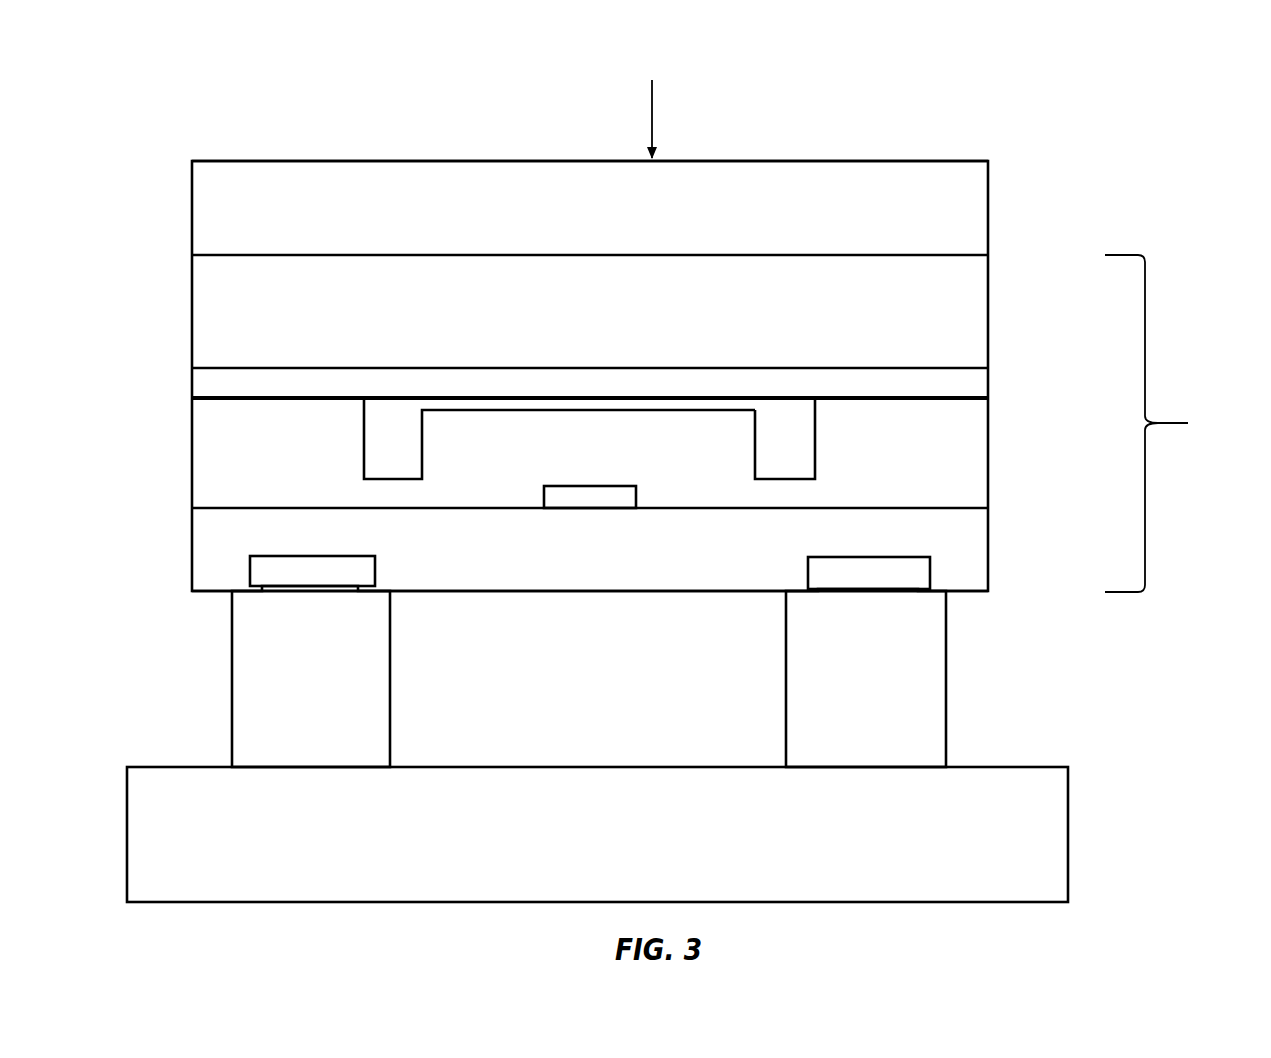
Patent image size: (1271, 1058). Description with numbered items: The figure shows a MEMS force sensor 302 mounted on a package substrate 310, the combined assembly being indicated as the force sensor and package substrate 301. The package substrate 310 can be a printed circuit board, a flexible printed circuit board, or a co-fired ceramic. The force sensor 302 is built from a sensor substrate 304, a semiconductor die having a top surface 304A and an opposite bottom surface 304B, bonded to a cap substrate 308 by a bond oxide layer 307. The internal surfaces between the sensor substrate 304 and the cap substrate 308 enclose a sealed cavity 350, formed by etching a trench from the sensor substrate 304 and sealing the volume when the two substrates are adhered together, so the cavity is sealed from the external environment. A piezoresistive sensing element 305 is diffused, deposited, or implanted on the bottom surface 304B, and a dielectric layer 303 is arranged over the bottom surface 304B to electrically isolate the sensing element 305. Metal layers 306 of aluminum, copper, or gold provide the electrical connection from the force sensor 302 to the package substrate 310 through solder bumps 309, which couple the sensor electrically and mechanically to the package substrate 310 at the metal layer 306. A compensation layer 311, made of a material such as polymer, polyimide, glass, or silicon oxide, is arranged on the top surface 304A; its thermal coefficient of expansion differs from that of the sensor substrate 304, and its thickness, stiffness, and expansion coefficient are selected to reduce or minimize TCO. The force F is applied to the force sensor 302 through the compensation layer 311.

The combined force sensor and package substrate 301 is at (959, 138).
The force sensor 302 is at (1185, 423).
The dielectric layer 303 is at (588, 569).
The sensor substrate 304 is at (929, 467).
The top surface 304A is at (924, 390).
The bottom surface 304B is at (929, 515).
The piezoresistive sensing element 305 is at (540, 496).
The metal layer 306 is at (245, 565).
The bond oxide layer 307 is at (188, 381).
The cap substrate 308 is at (188, 309).
The solder bumps 309 is at (950, 683).
The package substrate 310 is at (157, 824).
The compensation layer 311 is at (589, 158).
The sealed cavity 350 is at (789, 424).
The force F is at (653, 102).